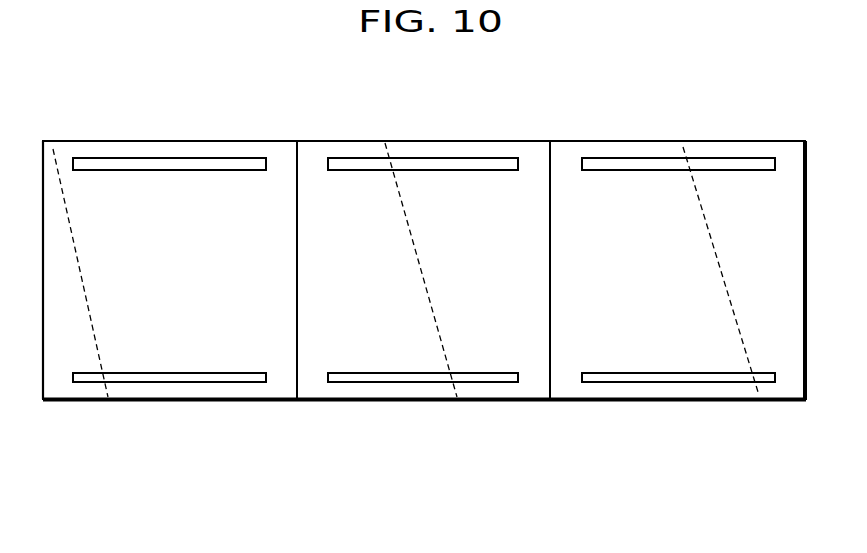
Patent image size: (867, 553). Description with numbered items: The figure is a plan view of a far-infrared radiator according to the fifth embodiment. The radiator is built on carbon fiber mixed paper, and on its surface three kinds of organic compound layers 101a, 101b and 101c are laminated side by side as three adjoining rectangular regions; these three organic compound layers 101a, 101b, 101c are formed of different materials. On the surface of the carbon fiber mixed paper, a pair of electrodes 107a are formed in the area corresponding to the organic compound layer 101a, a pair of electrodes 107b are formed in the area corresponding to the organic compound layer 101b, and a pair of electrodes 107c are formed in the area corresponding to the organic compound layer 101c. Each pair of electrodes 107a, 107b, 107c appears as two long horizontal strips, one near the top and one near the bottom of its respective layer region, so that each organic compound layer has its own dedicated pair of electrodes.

The organic compound layer 101a is at (128, 148).
The organic compound layer 101b is at (393, 148).
The organic compound layer 101c is at (642, 148).
The pair of electrodes 107a is at (188, 163).
The pair of electrodes 107b is at (453, 163).
The pair of electrodes 107c is at (703, 163).